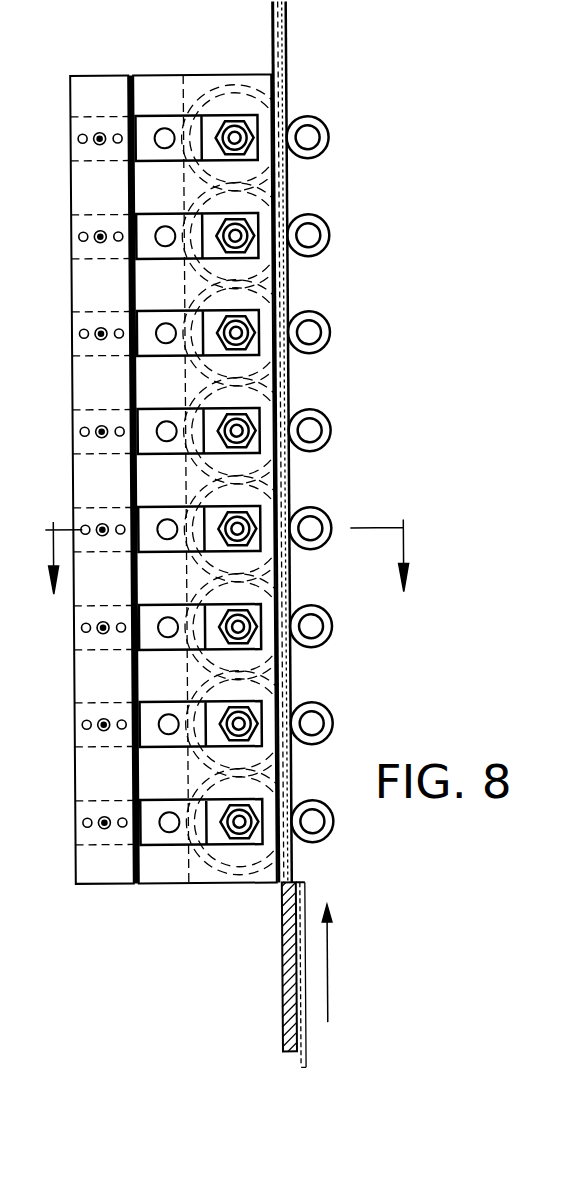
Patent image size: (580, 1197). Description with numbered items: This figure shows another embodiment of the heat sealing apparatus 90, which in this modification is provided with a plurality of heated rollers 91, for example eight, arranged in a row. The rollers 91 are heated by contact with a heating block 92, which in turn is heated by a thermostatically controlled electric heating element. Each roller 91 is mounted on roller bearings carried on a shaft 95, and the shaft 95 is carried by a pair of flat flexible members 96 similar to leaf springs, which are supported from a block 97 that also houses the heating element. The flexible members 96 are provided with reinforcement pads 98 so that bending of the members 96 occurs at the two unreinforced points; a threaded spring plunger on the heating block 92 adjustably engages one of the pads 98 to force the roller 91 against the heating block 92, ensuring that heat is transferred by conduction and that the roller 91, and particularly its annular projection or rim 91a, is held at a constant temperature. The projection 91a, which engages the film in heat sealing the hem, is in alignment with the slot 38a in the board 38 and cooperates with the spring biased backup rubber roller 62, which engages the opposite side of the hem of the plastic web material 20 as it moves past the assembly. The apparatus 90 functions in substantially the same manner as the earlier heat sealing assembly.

The heat sealing apparatus 90 is at (17, 241).
The block 97 is at (78, 89).
The heating block 92 is at (158, 86).
The reinforcement pads 98 is at (160, 247).
The flat flexible members 96 is at (215, 157).
The shaft 95 is at (225, 139).
The rollers 91 is at (290, 94).
The annular projection or rim 91a is at (288, 198).
The spring biased backup rubber roller 62 is at (331, 138).
The board 38 is at (280, 952).
The slot 38a is at (298, 871).
The web 20 is at (303, 963).